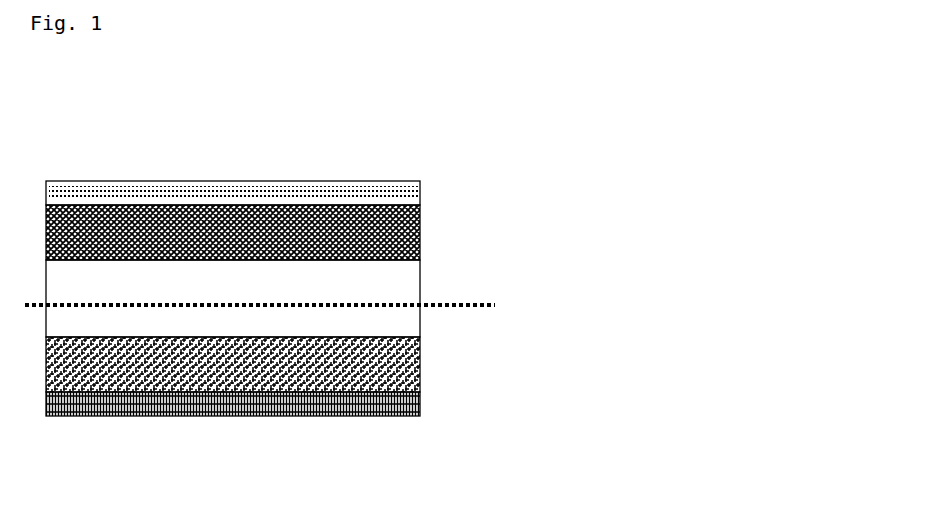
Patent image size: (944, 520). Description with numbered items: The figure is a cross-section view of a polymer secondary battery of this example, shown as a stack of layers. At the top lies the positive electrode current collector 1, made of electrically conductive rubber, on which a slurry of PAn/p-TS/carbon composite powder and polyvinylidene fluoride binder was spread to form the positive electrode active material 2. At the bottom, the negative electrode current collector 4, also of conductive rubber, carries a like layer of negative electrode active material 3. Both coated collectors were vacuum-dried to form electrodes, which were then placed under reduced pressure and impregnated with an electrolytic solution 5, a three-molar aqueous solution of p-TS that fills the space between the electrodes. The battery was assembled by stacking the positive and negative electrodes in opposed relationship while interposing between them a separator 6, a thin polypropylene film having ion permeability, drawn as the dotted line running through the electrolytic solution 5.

The positive electrode current collector 1 is at (242, 182).
The positive electrode active material 2 is at (420, 227).
The negative electrode active material 3 is at (373, 373).
The negative electrode current collector 4 is at (203, 415).
The electrolytic solution 5 is at (356, 284).
The separator 6 is at (495, 306).